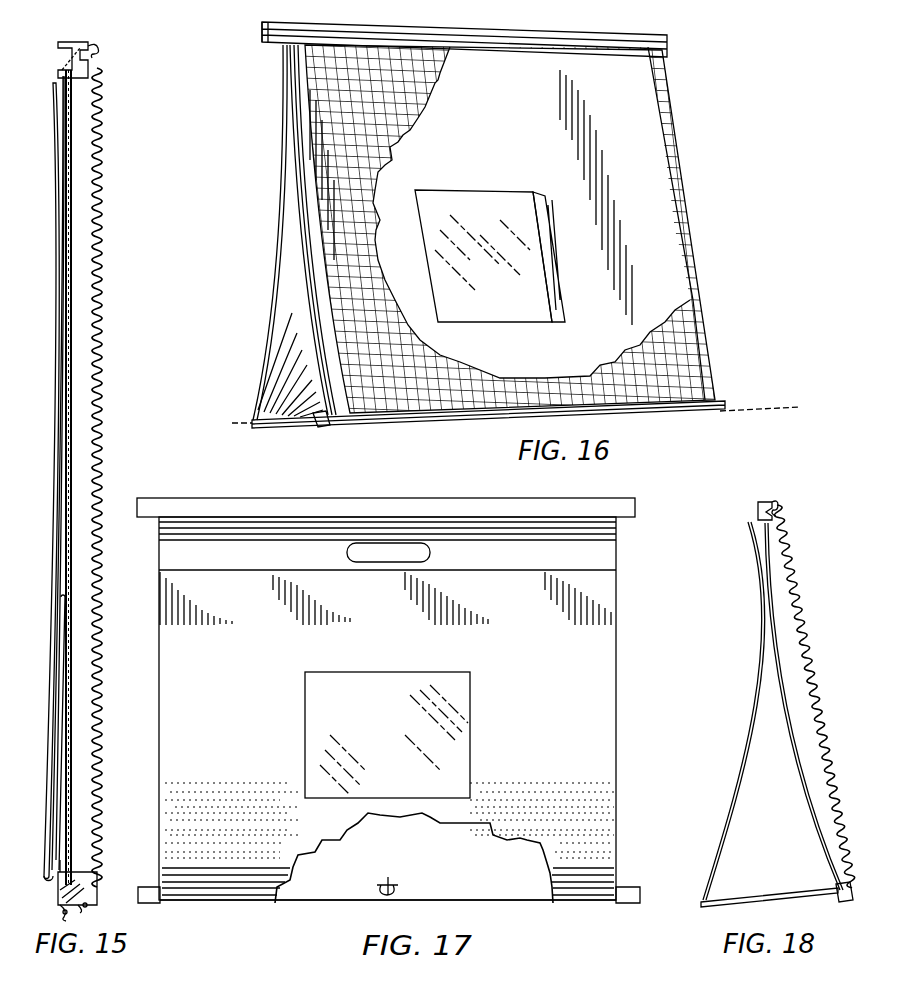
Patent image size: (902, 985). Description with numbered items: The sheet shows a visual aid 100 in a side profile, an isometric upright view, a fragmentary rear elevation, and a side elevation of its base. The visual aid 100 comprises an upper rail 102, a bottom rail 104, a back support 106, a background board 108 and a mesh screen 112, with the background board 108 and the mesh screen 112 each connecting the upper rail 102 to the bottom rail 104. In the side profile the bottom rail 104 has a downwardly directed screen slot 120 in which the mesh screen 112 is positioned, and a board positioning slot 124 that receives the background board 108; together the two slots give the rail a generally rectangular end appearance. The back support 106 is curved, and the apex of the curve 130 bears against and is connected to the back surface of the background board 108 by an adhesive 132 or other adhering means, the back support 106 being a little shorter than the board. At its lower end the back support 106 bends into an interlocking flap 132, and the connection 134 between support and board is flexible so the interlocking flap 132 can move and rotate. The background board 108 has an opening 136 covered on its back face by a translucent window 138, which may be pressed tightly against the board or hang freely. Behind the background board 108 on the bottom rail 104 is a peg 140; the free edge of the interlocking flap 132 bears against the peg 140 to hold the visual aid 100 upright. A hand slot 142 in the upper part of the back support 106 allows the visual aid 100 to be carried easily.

In FIG. 16, the visual aid 100 is at (707, 115).
In FIG. 15, the upper rail 102 is at (70, 45).
In FIG. 16, the upper rail 102 is at (262, 32).
In FIG. 17, the upper rail 102 is at (386, 507).
In FIG. 18, the upper rail 102 is at (768, 501).
In FIG. 15, the bottom rail 104 is at (98, 886).
In FIG. 16, the bottom rail 104 is at (516, 414).
In FIG. 17, the bottom rail 104 is at (389, 858).
In FIG. 18, the bottom rail 104 is at (769, 897).
In FIG. 15, the back support 106 is at (48, 146).
In FIG. 16, the back support 106 is at (262, 226).
In FIG. 17, the back support 106 is at (618, 705).
In FIG. 18, the back support 106 is at (752, 727).
In FIG. 16, the background board 108 is at (497, 230).
In FIG. 18, the background board 108 is at (788, 664).
In FIG. 15, the mesh screen 112 is at (104, 312).
In FIG. 16, the mesh screen 112 is at (510, 230).
In FIG. 18, the mesh screen 112 is at (812, 609).
In FIG. 15, the screen slot 120 is at (65, 907).
In FIG. 15, the board positioning slot 124 is at (92, 862).
In FIG. 15, the apex of the curve 130 is at (58, 236).
In FIG. 15, the interlocking flap 132 is at (66, 218).
In FIG. 15, the connection 134 is at (50, 890).
In FIG. 16, the opening 136 is at (552, 290).
In FIG. 17, the opening 136 is at (306, 706).
In FIG. 16, the translucent window 138 is at (506, 316).
In FIG. 17, the translucent window 138 is at (442, 770).
In FIG. 15, the peg 140 is at (58, 866).
In FIG. 17, the peg 140 is at (390, 884).
In FIG. 18, the peg 140 is at (835, 884).
In FIG. 17, the hand slot 142 is at (385, 545).